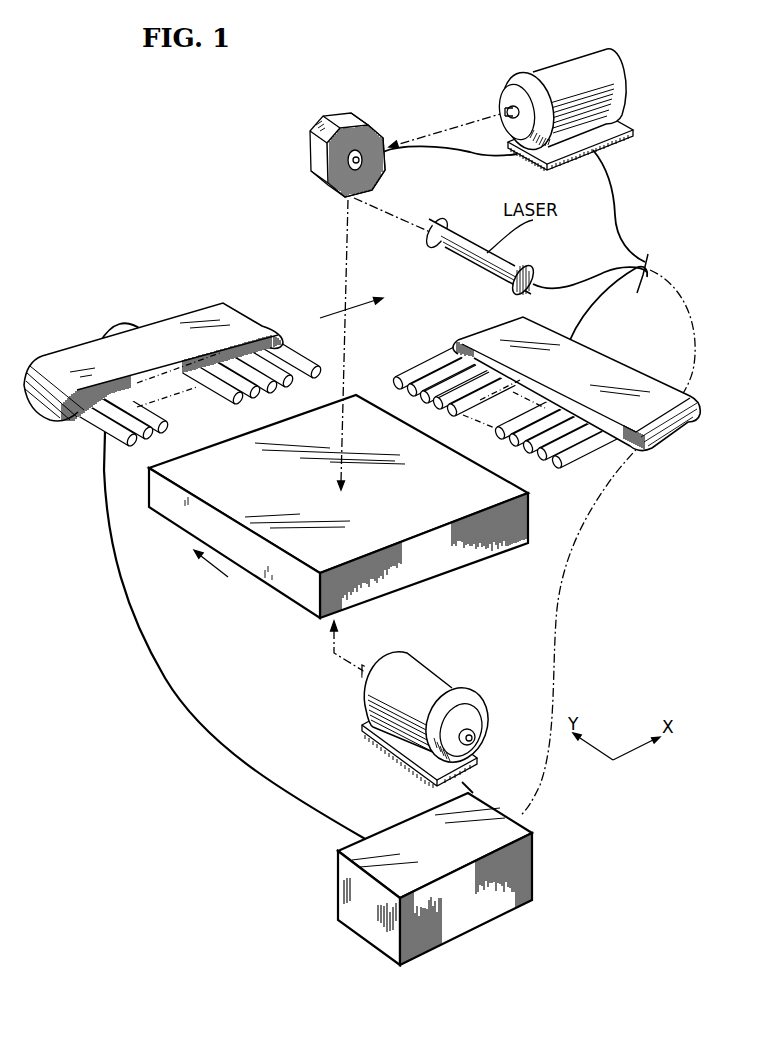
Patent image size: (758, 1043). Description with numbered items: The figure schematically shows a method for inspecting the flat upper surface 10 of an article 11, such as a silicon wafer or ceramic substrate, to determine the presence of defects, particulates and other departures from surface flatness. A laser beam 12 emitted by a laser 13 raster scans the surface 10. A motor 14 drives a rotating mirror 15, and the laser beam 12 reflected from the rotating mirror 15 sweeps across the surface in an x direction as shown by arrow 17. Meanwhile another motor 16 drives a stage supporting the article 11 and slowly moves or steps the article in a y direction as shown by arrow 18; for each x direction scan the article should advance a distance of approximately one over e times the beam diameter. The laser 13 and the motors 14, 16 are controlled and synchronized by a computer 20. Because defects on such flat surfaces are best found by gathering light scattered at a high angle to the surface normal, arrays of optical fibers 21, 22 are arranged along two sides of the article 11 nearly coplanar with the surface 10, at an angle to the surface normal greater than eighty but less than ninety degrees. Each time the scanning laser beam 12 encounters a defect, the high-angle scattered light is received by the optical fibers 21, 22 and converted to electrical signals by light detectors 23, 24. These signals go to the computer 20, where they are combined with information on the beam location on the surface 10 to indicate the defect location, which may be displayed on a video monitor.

The flat upper surface 10 is at (393, 537).
The article 11 is at (288, 580).
The laser beam 12 is at (347, 240).
The laser 13 is at (472, 276).
The motor 14 is at (558, 68).
The rotating mirror 15 is at (312, 155).
The motor 16 is at (440, 668).
The arrow 17 is at (333, 315).
The arrow 18 is at (215, 568).
The computer 20 is at (455, 905).
The array of optical fibers 21 is at (100, 420).
The array of optical fibers 22 is at (570, 466).
The light detector 23 is at (213, 322).
The light detector 24 is at (625, 378).